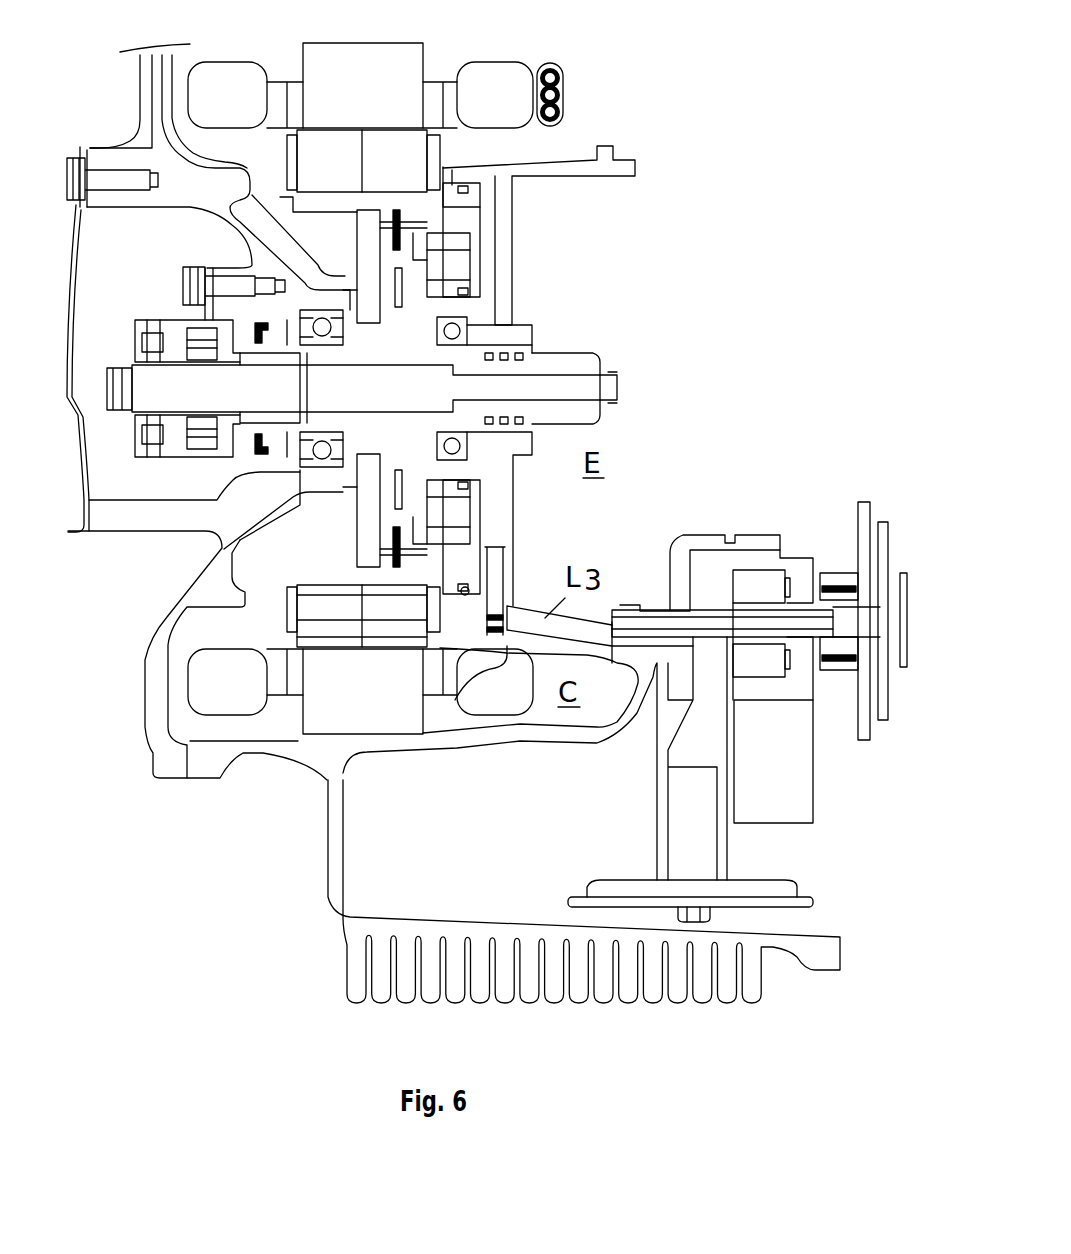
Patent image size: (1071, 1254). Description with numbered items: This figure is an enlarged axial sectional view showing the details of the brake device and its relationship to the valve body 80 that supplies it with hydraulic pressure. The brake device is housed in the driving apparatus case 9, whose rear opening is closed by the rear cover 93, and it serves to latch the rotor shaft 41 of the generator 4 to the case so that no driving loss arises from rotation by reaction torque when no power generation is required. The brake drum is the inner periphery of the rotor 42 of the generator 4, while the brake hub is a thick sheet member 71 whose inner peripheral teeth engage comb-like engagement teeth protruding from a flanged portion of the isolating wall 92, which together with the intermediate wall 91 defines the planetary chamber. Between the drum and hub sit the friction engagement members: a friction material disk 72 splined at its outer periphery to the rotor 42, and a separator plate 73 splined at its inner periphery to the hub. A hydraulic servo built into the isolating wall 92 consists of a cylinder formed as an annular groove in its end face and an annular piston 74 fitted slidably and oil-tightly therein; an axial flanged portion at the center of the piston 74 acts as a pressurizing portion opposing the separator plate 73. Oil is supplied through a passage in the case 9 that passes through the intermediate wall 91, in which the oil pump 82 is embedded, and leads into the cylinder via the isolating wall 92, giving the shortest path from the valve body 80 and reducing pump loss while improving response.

The generator 4 is at (458, 60).
The driving apparatus case 9 is at (327, 808).
The rotor shaft 41 is at (573, 357).
The rotor 42 is at (293, 205).
The thick sheet member 71 is at (403, 525).
The friction material disk 72 is at (413, 223).
The separator plate 73 is at (430, 250).
The piston 74 is at (470, 525).
The valve body 80 is at (807, 797).
The oil pump 82 is at (773, 573).
The intermediate wall 91 is at (697, 537).
The isolating wall 92 is at (562, 173).
The rear cover 93 is at (183, 607).